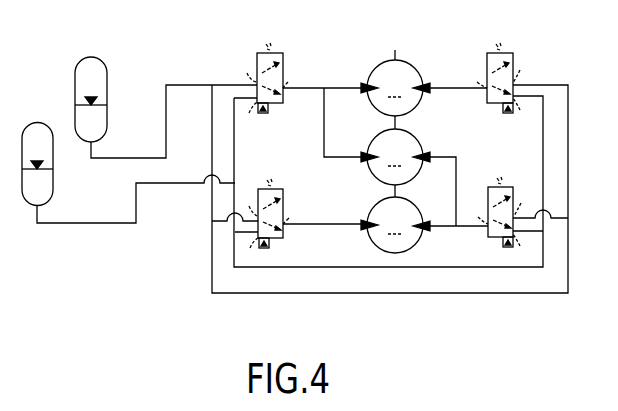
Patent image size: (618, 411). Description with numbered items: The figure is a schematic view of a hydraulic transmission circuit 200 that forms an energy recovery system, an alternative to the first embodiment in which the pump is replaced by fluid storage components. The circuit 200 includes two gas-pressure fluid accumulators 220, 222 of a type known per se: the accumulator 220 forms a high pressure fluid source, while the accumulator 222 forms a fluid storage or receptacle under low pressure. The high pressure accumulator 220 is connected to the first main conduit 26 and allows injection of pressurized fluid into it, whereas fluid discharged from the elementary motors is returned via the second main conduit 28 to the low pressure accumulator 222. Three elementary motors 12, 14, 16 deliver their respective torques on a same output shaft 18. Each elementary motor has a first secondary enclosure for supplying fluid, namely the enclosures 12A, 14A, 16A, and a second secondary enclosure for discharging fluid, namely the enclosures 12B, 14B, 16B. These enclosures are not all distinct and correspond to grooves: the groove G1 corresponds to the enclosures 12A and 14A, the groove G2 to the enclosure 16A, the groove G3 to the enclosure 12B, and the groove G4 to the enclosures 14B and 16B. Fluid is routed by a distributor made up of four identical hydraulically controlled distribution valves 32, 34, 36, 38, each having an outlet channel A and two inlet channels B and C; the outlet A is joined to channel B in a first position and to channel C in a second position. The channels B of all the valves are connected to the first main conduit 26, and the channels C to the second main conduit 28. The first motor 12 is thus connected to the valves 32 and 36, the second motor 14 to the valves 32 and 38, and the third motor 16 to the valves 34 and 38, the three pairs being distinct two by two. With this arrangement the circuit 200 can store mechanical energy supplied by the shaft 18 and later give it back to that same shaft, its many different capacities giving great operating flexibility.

The circuit 200 is at (200, 52).
The first main conduit 26 is at (179, 84).
The second main conduit 28 is at (183, 185).
The high pressure accumulator 220 is at (108, 117).
The low pressure accumulator 222 is at (55, 181).
The distribution valve 32 is at (285, 58).
The distribution valve 34 is at (285, 195).
The distribution valve 36 is at (488, 51).
The distribution valve 38 is at (488, 186).
The first elementary motor 12 is at (395, 94).
The second elementary motor 14 is at (395, 163).
The third elementary motor 16 is at (395, 225).
The output shaft 18 is at (399, 55).
The first secondary enclosure 12A is at (364, 86).
The second secondary enclosure 12B is at (437, 79).
The first secondary enclosure 14A is at (364, 154).
The second secondary enclosure 14B is at (428, 154).
The first secondary enclosure 16A is at (364, 222).
The second secondary enclosure 16B is at (428, 223).
The groove G1 is at (324, 87).
The groove G2 is at (321, 226).
The groove G3 is at (452, 90).
The groove G4 is at (453, 228).